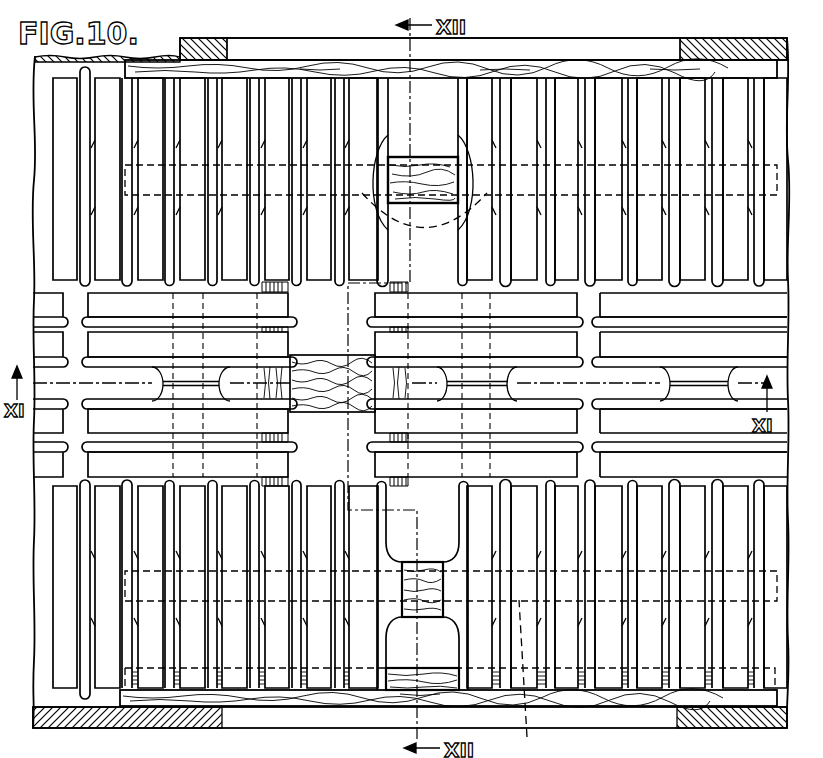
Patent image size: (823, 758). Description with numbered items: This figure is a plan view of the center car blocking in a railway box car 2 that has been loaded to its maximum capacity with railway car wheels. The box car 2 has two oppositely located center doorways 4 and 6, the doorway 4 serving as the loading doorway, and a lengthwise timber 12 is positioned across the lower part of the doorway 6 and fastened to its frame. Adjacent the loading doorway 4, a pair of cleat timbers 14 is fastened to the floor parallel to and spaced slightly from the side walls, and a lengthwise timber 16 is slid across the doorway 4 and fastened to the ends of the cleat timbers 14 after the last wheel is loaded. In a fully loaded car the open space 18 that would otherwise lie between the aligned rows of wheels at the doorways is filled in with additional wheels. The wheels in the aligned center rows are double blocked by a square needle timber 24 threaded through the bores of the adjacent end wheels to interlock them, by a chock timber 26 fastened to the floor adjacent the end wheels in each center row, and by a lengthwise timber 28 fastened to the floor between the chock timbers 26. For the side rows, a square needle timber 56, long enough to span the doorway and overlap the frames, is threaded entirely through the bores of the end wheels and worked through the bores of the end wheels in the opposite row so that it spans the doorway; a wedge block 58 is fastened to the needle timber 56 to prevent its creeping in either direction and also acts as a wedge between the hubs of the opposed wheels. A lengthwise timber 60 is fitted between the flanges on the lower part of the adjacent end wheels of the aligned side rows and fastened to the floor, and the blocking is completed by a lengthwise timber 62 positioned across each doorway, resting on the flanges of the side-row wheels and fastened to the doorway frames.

The railway box car 2 is at (708, 58).
The doorway 4 is at (677, 718).
The doorway 6 is at (678, 50).
The lengthwise timber 12 is at (435, 70).
The cleat timbers 14 is at (434, 665).
The lengthwise timber 16 is at (436, 703).
The open space 18 is at (452, 268).
The square needle timber 24 is at (176, 423).
The chock timber 26 is at (375, 331).
The lengthwise timber 28 is at (323, 405).
The square needle timber 56 is at (454, 475).
The wedge block 58 is at (424, 570).
The lengthwise timber 60 is at (424, 168).
The lengthwise timber 62 is at (258, 62).